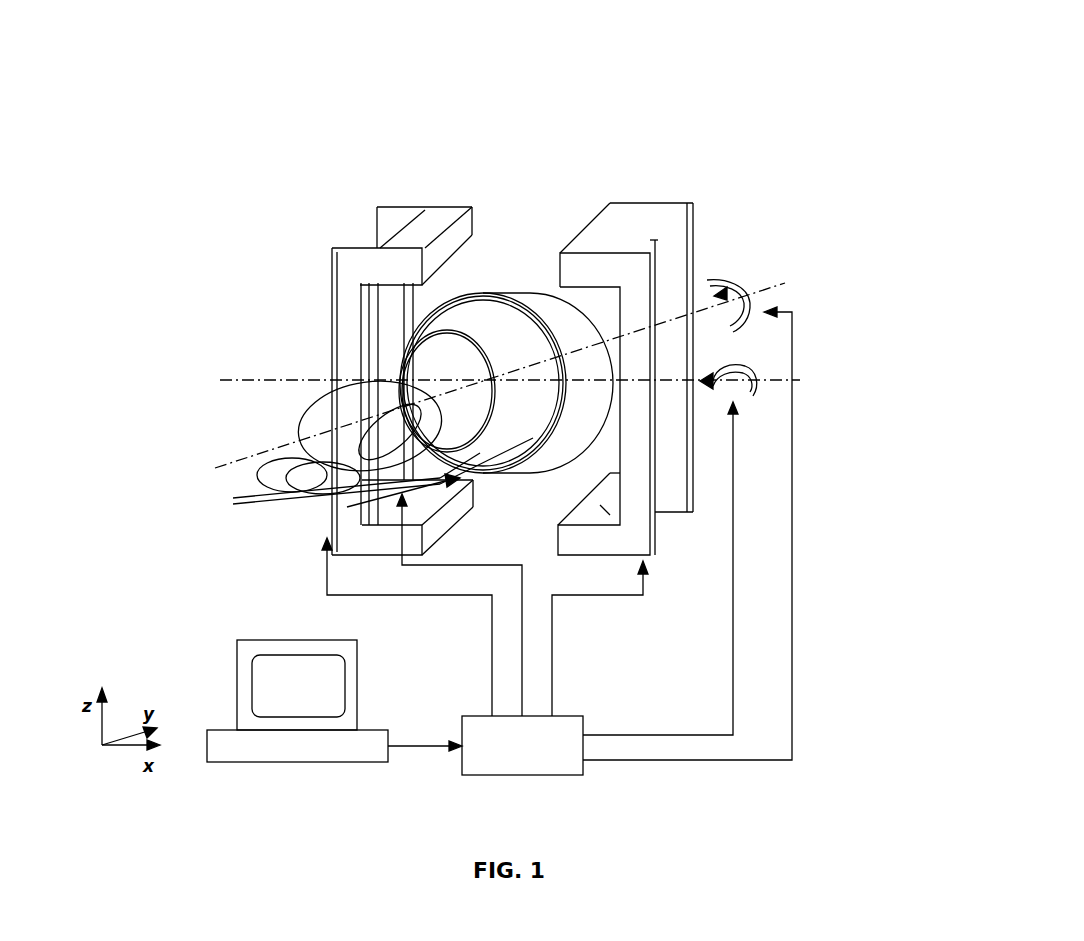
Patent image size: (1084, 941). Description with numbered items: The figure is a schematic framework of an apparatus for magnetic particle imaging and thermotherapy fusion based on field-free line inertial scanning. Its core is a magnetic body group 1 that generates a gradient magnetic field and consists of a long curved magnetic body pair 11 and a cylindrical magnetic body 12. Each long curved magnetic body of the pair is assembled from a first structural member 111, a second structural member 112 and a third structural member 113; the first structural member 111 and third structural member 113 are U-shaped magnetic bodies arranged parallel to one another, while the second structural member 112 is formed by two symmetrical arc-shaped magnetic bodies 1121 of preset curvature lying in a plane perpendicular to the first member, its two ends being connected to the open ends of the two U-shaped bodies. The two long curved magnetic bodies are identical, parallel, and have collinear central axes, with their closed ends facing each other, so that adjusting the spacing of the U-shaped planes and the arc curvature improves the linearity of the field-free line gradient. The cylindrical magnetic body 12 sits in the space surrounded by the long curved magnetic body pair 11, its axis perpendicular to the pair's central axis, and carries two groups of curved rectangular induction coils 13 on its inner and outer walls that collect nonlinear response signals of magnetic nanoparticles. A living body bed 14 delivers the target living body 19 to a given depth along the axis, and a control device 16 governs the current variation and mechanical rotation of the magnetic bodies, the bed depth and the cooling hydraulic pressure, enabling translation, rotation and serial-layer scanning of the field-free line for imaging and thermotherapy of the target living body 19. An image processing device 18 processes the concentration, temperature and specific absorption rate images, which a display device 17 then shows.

The magnetic body group 1 is at (882, 160).
The long curved magnetic body pair 11 is at (330, 290).
The first structural member 111 is at (612, 230).
The second structural member 112 is at (780, 245).
The arc-shaped magnetic body 1121 is at (810, 208).
The third structural member 113 is at (603, 505).
The cylindrical magnetic body 12 is at (535, 310).
The induction coil 13 is at (537, 308).
The living body bed 14 is at (263, 502).
The control device 16 is at (540, 758).
The display device 17 is at (300, 661).
The image processing device 18 is at (338, 752).
The target living body 19 is at (296, 442).